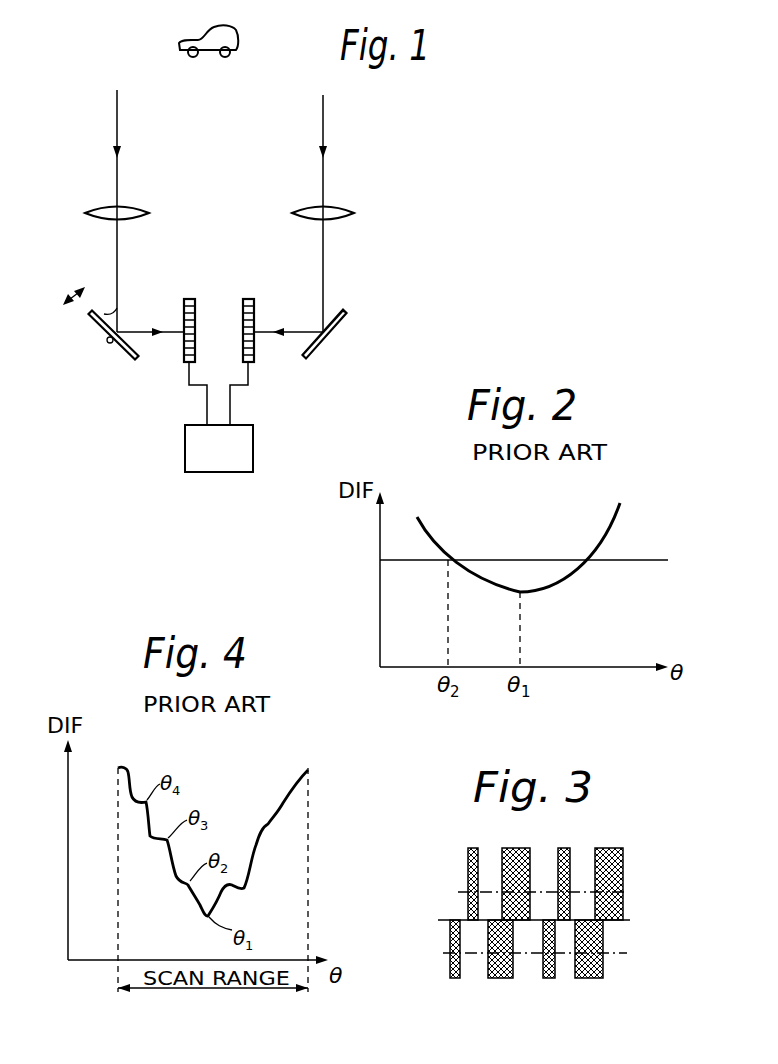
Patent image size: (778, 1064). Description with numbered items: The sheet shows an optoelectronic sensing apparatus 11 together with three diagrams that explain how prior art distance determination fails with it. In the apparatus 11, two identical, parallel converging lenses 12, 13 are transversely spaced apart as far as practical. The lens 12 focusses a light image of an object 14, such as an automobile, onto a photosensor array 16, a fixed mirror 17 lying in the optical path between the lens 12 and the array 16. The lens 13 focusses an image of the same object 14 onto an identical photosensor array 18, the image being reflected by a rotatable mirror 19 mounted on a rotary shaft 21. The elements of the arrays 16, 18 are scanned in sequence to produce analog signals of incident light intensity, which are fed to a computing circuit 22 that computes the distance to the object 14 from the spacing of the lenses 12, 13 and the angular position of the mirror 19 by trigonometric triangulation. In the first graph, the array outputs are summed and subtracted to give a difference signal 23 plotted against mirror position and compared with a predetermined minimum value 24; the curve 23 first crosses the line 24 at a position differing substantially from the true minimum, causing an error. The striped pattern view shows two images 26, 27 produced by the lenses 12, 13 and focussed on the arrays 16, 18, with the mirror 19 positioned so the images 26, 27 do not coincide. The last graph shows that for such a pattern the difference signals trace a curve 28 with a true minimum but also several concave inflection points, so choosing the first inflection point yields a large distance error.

In FIG. 1, the optoelectronic sensing apparatus 11 is at (373, 241).
In FIG. 1, the converging lens 12 is at (346, 208).
In FIG. 1, the converging lens 13 is at (143, 208).
In FIG. 1, the object 14 is at (178, 42).
In FIG. 1, the photosensor array 16 is at (250, 298).
In FIG. 3, the photosensor array 16 is at (627, 892).
In FIG. 1, the fixed mirror 17 is at (346, 322).
In FIG. 1, the photosensor array 18 is at (190, 298).
In FIG. 3, the photosensor array 18 is at (618, 955).
In FIG. 1, the rotatable mirror 19 is at (99, 322).
In FIG. 1, the rotary shaft 21 is at (112, 345).
In FIG. 1, the computing circuit 22 is at (255, 445).
In FIG. 2, the difference signal 23 is at (616, 518).
In FIG. 2, the predetermined minimum value 24 is at (404, 563).
In FIG. 3, the image 26 is at (573, 875).
In FIG. 3, the image 27 is at (567, 954).
In FIG. 4, the curve 28 is at (168, 858).